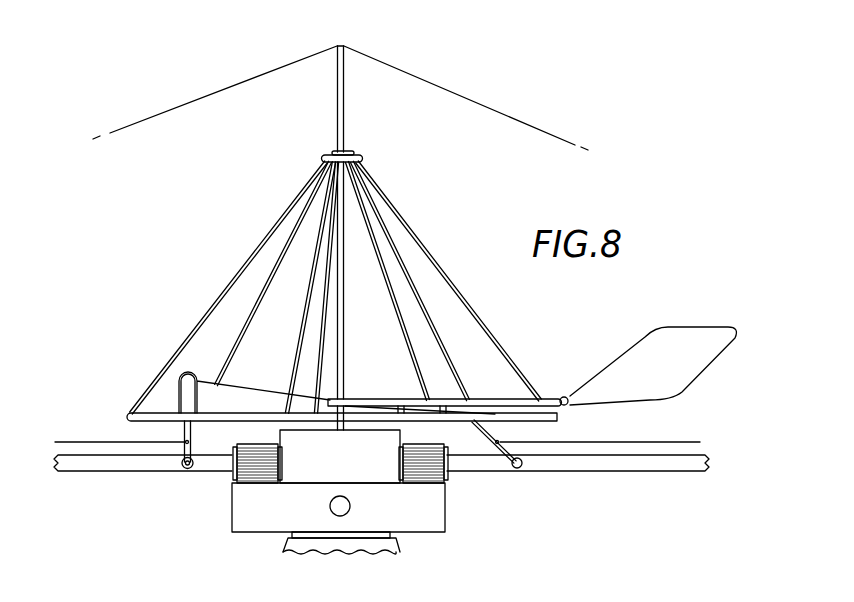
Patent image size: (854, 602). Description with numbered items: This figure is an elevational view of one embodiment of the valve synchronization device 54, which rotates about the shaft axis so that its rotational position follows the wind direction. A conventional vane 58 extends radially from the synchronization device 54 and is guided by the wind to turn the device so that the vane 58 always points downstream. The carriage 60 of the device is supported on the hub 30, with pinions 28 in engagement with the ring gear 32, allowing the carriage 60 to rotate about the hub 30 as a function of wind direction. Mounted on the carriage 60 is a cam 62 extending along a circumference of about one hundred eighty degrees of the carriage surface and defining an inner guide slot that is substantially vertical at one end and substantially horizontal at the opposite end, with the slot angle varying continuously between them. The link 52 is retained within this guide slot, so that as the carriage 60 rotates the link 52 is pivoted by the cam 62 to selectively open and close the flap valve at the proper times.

The pinions 28 is at (265, 471).
The hub 30 is at (372, 463).
The ring gear 32 is at (270, 520).
The link 52 is at (193, 436).
The synchronization device 54 is at (207, 249).
The vane 58 is at (675, 352).
The carriage 60 is at (155, 410).
The cam 62 is at (265, 390).